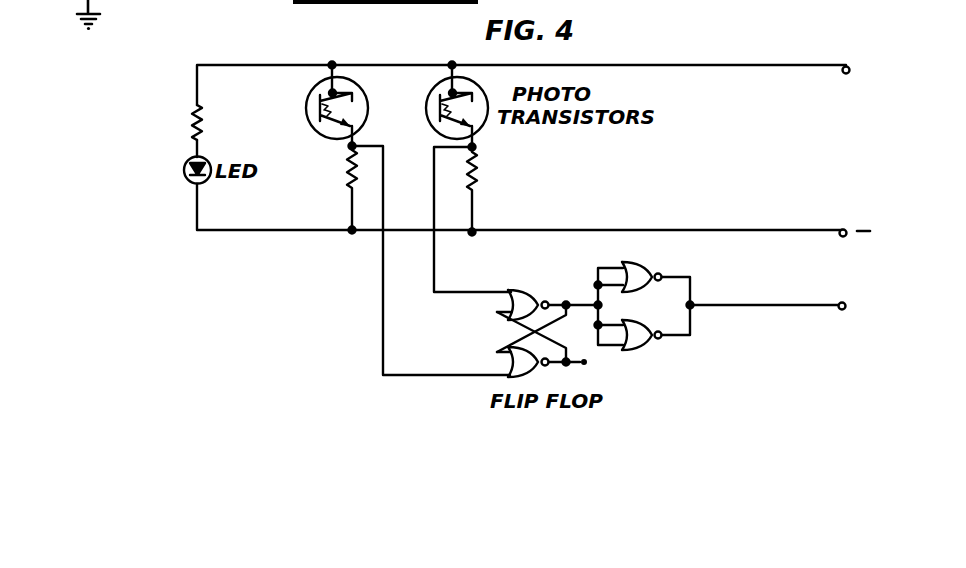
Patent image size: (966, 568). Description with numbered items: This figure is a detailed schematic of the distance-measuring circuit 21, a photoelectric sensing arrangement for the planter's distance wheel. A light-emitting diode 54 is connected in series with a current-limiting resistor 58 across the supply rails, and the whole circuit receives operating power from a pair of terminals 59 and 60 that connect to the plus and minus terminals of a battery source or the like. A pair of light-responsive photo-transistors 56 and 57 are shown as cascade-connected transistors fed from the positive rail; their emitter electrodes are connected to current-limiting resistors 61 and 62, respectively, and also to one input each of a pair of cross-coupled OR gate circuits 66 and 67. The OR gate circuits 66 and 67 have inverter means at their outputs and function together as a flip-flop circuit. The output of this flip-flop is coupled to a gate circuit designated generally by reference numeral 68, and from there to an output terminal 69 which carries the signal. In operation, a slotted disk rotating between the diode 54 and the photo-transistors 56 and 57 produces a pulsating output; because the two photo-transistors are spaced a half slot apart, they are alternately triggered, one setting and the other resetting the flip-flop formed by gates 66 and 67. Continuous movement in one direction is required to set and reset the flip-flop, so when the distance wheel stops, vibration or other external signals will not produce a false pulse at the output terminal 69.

The photoelectric sensing circuit 21 is at (344, 262).
The light-emitting diode 54 is at (184, 171).
The photo-transistor 56 is at (308, 99).
The photo-transistor 57 is at (428, 100).
The current-limiting resistor 58 is at (193, 120).
The terminal 59 is at (842, 66).
The terminal 60 is at (839, 230).
The current-limiting resistor 61 is at (348, 168).
The current-limiting resistor 62 is at (478, 172).
The OR gate circuit 66 is at (520, 292).
The OR gate circuit 67 is at (508, 358).
The gate circuit 68 is at (672, 309).
The output terminal 69 is at (838, 304).